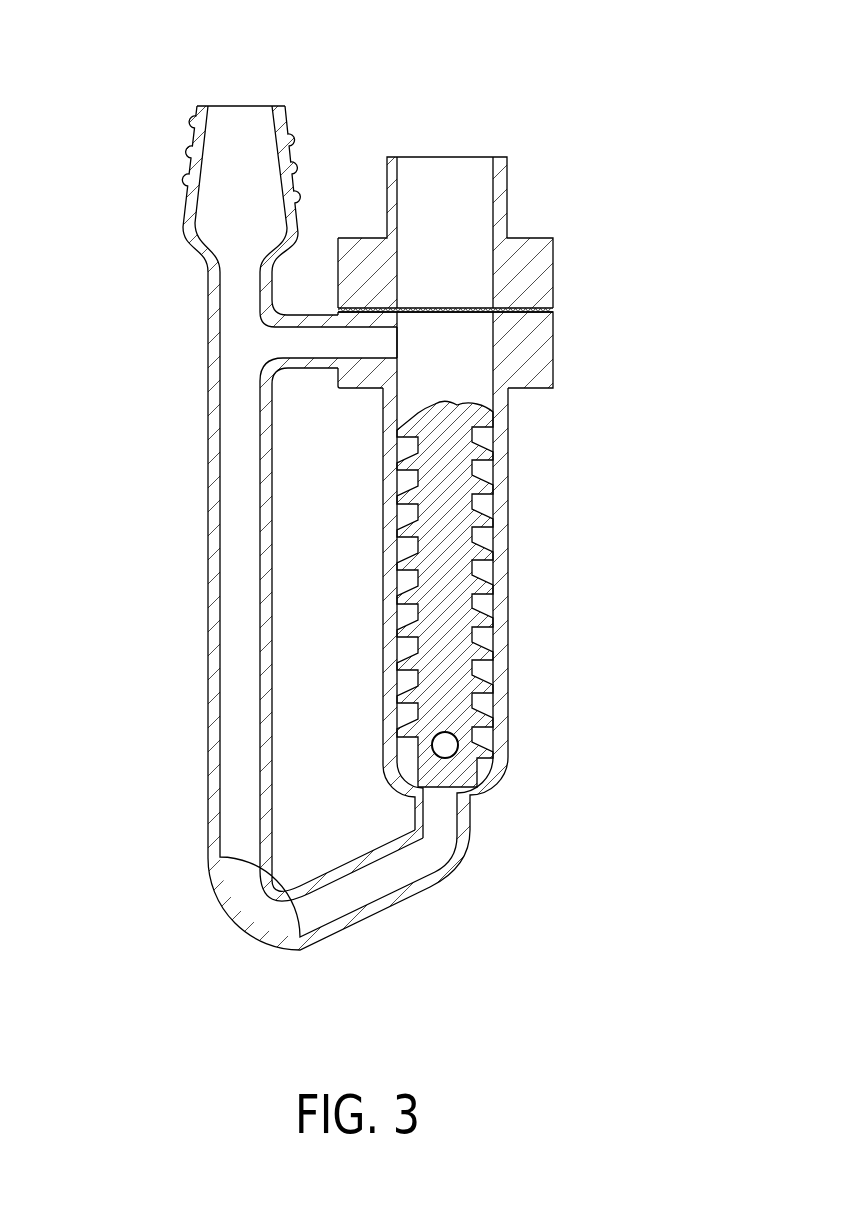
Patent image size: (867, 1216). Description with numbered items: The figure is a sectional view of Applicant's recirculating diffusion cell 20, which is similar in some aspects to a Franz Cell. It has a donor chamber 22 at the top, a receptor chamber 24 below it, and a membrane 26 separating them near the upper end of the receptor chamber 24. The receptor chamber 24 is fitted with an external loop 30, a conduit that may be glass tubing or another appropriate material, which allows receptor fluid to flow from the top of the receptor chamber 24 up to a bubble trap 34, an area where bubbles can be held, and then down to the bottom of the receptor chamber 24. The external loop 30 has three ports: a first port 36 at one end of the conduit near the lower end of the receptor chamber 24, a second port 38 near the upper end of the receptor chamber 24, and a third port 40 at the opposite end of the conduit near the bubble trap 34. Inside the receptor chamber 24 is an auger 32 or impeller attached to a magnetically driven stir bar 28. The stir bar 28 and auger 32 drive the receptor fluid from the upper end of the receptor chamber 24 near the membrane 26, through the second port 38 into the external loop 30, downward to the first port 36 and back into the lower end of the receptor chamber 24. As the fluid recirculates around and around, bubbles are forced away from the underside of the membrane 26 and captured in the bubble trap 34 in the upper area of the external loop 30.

The recirculating diffusion cell 20 is at (423, 479).
The donor chamber 22 is at (507, 208).
The receptor chamber 24 is at (508, 618).
The membrane 26 is at (553, 310).
The stir bar 28 is at (458, 745).
The external loop 30 is at (213, 528).
The auger 32 is at (455, 405).
The bubble trap 34 is at (188, 207).
The first port 36 is at (440, 807).
The second port 38 is at (272, 342).
The third port 40 is at (248, 107).